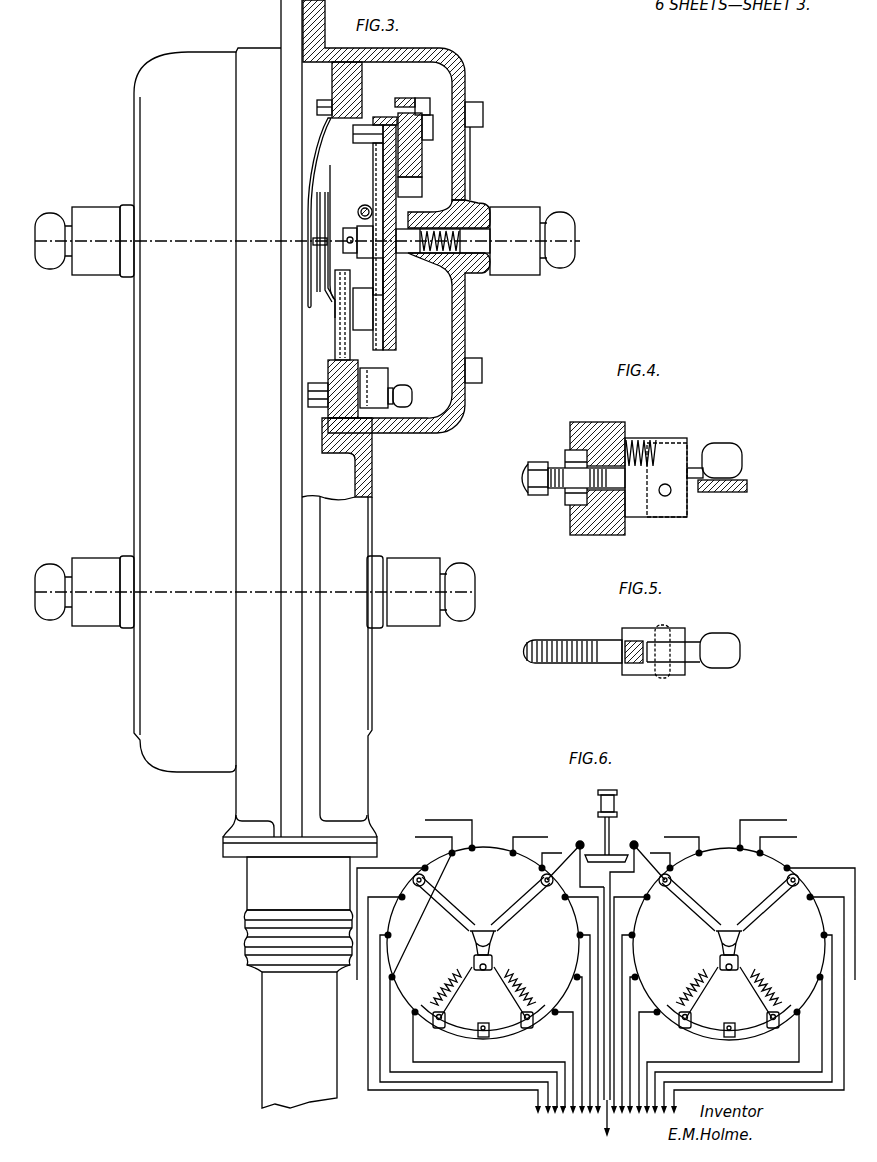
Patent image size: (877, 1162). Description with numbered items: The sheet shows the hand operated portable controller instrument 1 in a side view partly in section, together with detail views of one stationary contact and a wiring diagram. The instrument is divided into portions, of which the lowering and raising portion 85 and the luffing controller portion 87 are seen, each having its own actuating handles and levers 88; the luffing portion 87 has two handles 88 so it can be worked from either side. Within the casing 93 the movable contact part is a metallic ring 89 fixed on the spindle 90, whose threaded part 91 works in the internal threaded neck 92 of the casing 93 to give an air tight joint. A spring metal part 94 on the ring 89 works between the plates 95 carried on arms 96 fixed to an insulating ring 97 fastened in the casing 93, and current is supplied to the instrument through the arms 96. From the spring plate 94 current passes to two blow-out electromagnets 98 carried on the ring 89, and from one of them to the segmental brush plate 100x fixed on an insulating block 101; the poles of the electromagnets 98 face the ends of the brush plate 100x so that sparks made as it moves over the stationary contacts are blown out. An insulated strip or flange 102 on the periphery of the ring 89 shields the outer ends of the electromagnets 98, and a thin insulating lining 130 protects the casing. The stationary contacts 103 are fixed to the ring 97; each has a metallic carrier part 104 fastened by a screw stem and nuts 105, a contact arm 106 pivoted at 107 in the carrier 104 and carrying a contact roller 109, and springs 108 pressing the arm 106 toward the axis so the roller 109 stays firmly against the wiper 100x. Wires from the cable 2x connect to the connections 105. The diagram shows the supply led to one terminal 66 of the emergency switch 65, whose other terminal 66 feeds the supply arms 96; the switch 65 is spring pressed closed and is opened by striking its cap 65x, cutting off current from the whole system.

In FIG. 3, the controller instrument 1 is at (257, 486).
In FIG. 6, the controller instrument 1 is at (606, 978).
In FIG. 3, the cable 2x is at (282, 1035).
In FIG. 3, the lowering and raising portion 85 is at (188, 231).
In FIG. 3, the luffing controller portion 87 is at (184, 581).
In FIG. 3, the actuating handles and levers 88 is at (84, 220).
In FIG. 3, the metallic ring 89 is at (396, 166).
In FIG. 3, the spindle 90 is at (470, 228).
In FIG. 3, the threaded part 91 is at (476, 268).
In FIG. 3, the internal threaded neck 92 is at (432, 268).
In FIG. 3, the casing 93 is at (452, 68).
In FIG. 3, the spring metal part 94 is at (329, 260).
In FIG. 6, the spring metal part 94 is at (494, 950).
In FIG. 3, the plates 95 is at (325, 210).
In FIG. 3, the arms 96 is at (309, 182).
In FIG. 6, the arms 96 is at (520, 912).
In FIG. 3, the insulating ring 97 is at (332, 83).
In FIG. 4, the insulating ring 97 is at (604, 525).
In FIG. 6, the blow-out electromagnets 98 is at (446, 980).
In FIG. 3, the segmental brush plate 100x is at (401, 98).
In FIG. 4, the segmental brush plate 100x is at (722, 494).
In FIG. 6, the segmental brush plate 100x is at (486, 1040).
In FIG. 3, the insulating block 101 is at (422, 158).
In FIG. 3, the insulated strip or flange 102 is at (385, 117).
In FIG. 3, the stationary contacts 103 is at (378, 388).
In FIG. 4, the stationary contacts 103 is at (601, 413).
In FIG. 6, the stationary contacts 103 is at (396, 940).
In FIG. 3, the metallic carrier part 104 is at (390, 402).
In FIG. 4, the metallic carrier part 104 is at (680, 430).
In FIG. 5, the metallic carrier part 104 is at (645, 628).
In FIG. 3, the screw stem and nuts 105 is at (309, 395).
In FIG. 4, the screw stem and nuts 105 is at (541, 500).
In FIG. 5, the screw stem and nuts 105 is at (575, 640).
In FIG. 4, the contact arm 106 is at (697, 462).
In FIG. 5, the contact arm 106 is at (690, 641).
In FIG. 4, the pivot 107 is at (668, 496).
In FIG. 5, the pivot 107 is at (665, 678).
In FIG. 4, the springs 108 is at (641, 438).
In FIG. 3, the contact roller 109 is at (406, 402).
In FIG. 4, the contact roller 109 is at (730, 455).
In FIG. 5, the contact roller 109 is at (725, 640).
In FIG. 3, the thin insulating lining 130 is at (470, 96).
In FIG. 6, the emergency switch 65 is at (616, 855).
In FIG. 6, the cap 65x is at (600, 797).
In FIG. 6, the terminals 66 is at (578, 843).